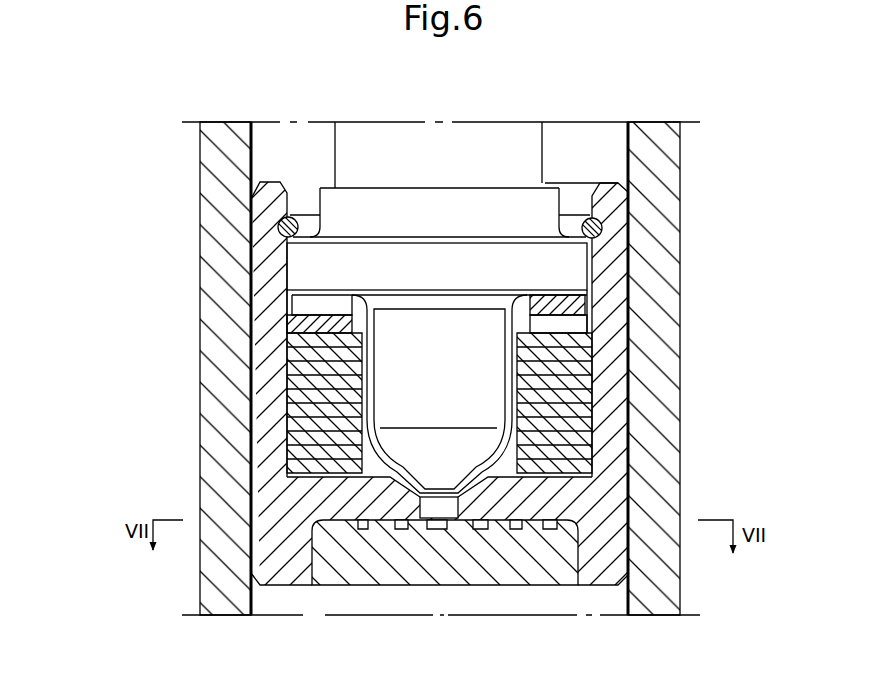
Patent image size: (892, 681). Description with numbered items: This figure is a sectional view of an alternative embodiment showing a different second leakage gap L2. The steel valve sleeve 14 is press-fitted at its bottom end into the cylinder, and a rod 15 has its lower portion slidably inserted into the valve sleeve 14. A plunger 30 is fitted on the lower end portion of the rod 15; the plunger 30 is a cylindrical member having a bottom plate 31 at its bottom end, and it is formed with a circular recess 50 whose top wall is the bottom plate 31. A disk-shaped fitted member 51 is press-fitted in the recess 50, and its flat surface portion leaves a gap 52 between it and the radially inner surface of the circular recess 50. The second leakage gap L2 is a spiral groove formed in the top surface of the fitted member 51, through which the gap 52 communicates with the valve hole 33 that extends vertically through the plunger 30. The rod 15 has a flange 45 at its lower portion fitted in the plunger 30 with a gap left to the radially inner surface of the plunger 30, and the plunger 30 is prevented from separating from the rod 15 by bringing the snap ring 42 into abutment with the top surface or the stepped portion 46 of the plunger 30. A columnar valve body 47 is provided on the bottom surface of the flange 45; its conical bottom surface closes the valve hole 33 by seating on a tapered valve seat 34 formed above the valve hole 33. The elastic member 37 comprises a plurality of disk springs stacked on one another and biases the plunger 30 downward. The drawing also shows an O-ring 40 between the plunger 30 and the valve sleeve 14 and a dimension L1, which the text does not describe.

The valve sleeve 14 is at (210, 148).
The rod 15 is at (383, 132).
The plunger 30 is at (258, 218).
The bottom plate 31 is at (340, 507).
The valve hole 33 is at (440, 510).
The tapered valve seat 34 is at (489, 477).
The elastic member 37 is at (292, 423).
The O-ring 40 is at (612, 227).
The snap ring 42 is at (625, 199).
The flange 45 is at (585, 272).
The stepped portion 46 is at (588, 238).
The valve body 47 is at (445, 366).
The circular recess 50 is at (578, 537).
The fitted member 51 is at (410, 580).
The gap 52 is at (307, 553).
The length L1 is at (253, 283).
The second leakage gap L2 is at (393, 528).